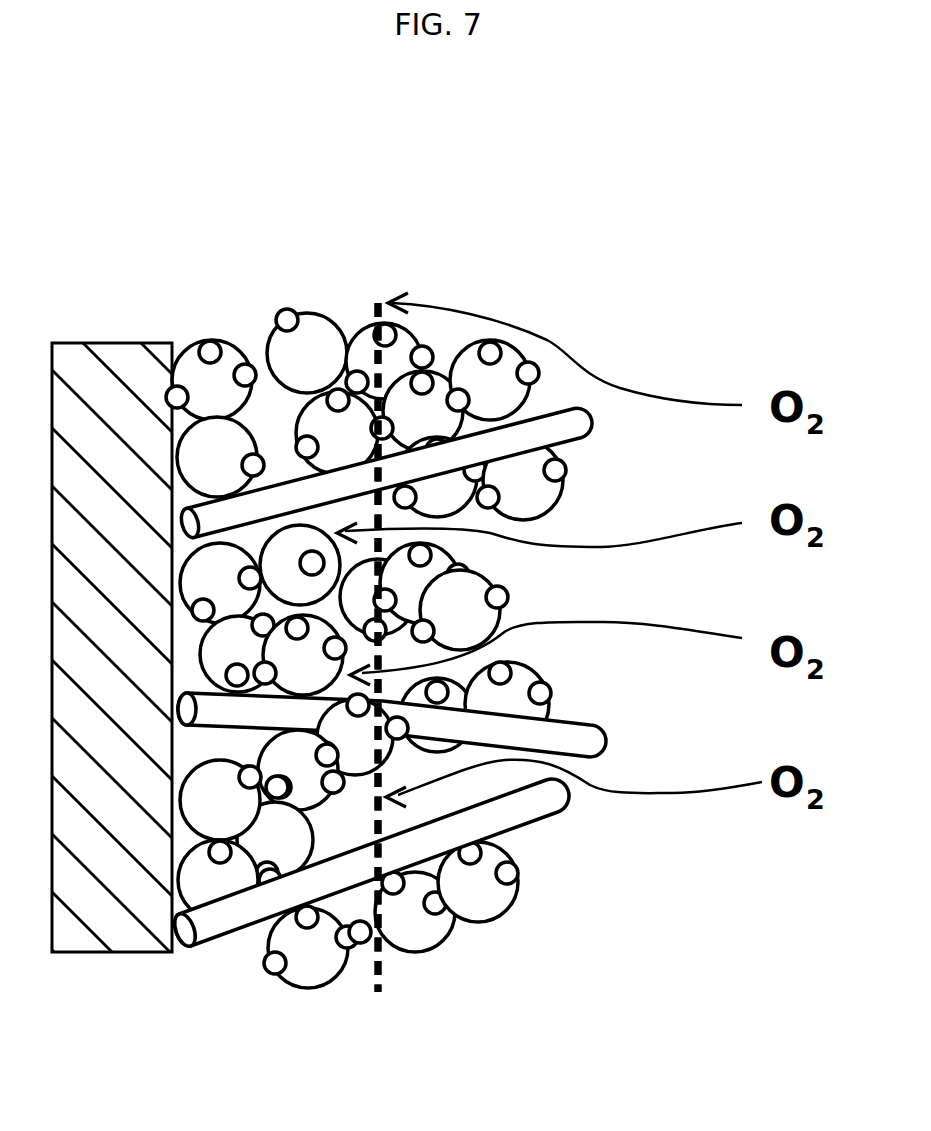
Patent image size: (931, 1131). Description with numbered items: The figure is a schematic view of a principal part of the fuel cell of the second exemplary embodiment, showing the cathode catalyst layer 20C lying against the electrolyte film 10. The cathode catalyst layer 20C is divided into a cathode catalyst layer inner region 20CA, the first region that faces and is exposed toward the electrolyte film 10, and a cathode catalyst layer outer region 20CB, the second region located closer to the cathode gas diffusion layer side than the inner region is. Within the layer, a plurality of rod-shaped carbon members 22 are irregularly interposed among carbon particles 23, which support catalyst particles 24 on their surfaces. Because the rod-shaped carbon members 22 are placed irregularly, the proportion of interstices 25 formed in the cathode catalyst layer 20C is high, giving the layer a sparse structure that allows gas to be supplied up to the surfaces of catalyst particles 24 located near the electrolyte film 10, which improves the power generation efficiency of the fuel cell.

The electrolyte film 10 is at (172, 215).
The cathode catalyst layer 20C is at (397, 612).
The cathode catalyst layer inner region 20CA is at (178, 282).
The cathode catalyst layer outer region 20CB is at (480, 602).
The rod-shaped carbon member 22 is at (527, 808).
The carbon particle 23 is at (295, 995).
The catalyst particle 24 is at (272, 968).
The interstice 25 is at (468, 550).